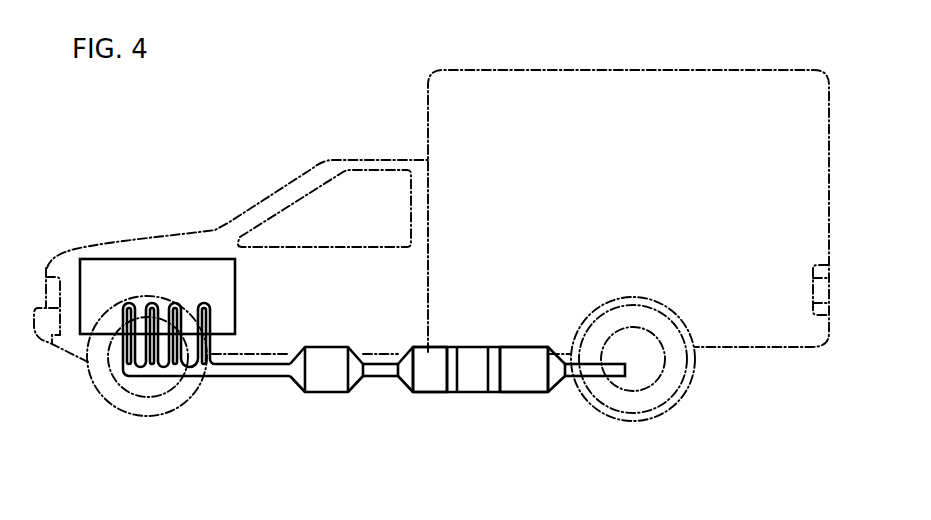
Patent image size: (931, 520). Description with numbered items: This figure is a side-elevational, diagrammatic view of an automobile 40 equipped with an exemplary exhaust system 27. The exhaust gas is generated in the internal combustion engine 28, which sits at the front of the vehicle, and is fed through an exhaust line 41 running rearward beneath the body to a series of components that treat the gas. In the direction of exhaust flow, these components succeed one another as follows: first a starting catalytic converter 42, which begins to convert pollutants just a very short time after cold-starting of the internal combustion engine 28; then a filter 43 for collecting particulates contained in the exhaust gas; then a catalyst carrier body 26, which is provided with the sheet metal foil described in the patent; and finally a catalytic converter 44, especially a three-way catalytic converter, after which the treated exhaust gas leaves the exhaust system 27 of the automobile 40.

The automobile 40 is at (737, 78).
The internal combustion engine 28 is at (222, 297).
The exhaust system 27 is at (458, 313).
The exhaust line 41 is at (211, 378).
The starting catalytic converter 42 is at (324, 393).
The filter 43 is at (430, 393).
The catalyst carrier body 26 is at (468, 393).
The catalytic converter 44 is at (523, 393).